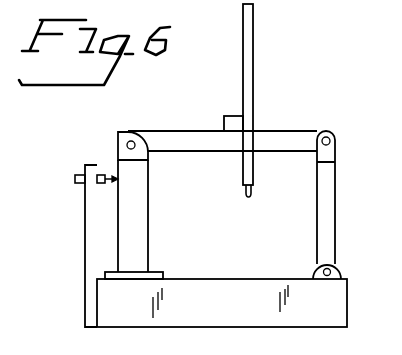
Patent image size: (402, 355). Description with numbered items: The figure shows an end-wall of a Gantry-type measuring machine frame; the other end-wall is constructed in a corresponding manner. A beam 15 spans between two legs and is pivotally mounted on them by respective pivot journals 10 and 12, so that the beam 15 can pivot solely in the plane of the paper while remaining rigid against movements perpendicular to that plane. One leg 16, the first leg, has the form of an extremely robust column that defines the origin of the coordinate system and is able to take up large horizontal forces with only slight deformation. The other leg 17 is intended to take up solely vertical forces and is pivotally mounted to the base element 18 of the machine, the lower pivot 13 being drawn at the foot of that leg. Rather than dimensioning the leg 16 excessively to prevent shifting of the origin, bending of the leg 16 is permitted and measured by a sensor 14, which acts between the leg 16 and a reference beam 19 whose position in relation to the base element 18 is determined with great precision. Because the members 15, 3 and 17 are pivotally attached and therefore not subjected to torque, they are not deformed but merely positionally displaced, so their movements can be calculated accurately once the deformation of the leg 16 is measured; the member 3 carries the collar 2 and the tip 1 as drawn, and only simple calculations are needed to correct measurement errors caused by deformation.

The probe tip 1 is at (243, 191).
The collar 2 is at (233, 116).
The component member 3 is at (254, 67).
The pivot journal 10 is at (127, 143).
The pivot journal 12 is at (326, 131).
The lower pivot 13 is at (318, 270).
The sensor 14 is at (75, 178).
The beam 15 is at (179, 130).
The leg 16 is at (142, 189).
The leg 17 is at (320, 187).
The base element 18 is at (225, 285).
The reference beam 19 is at (84, 247).